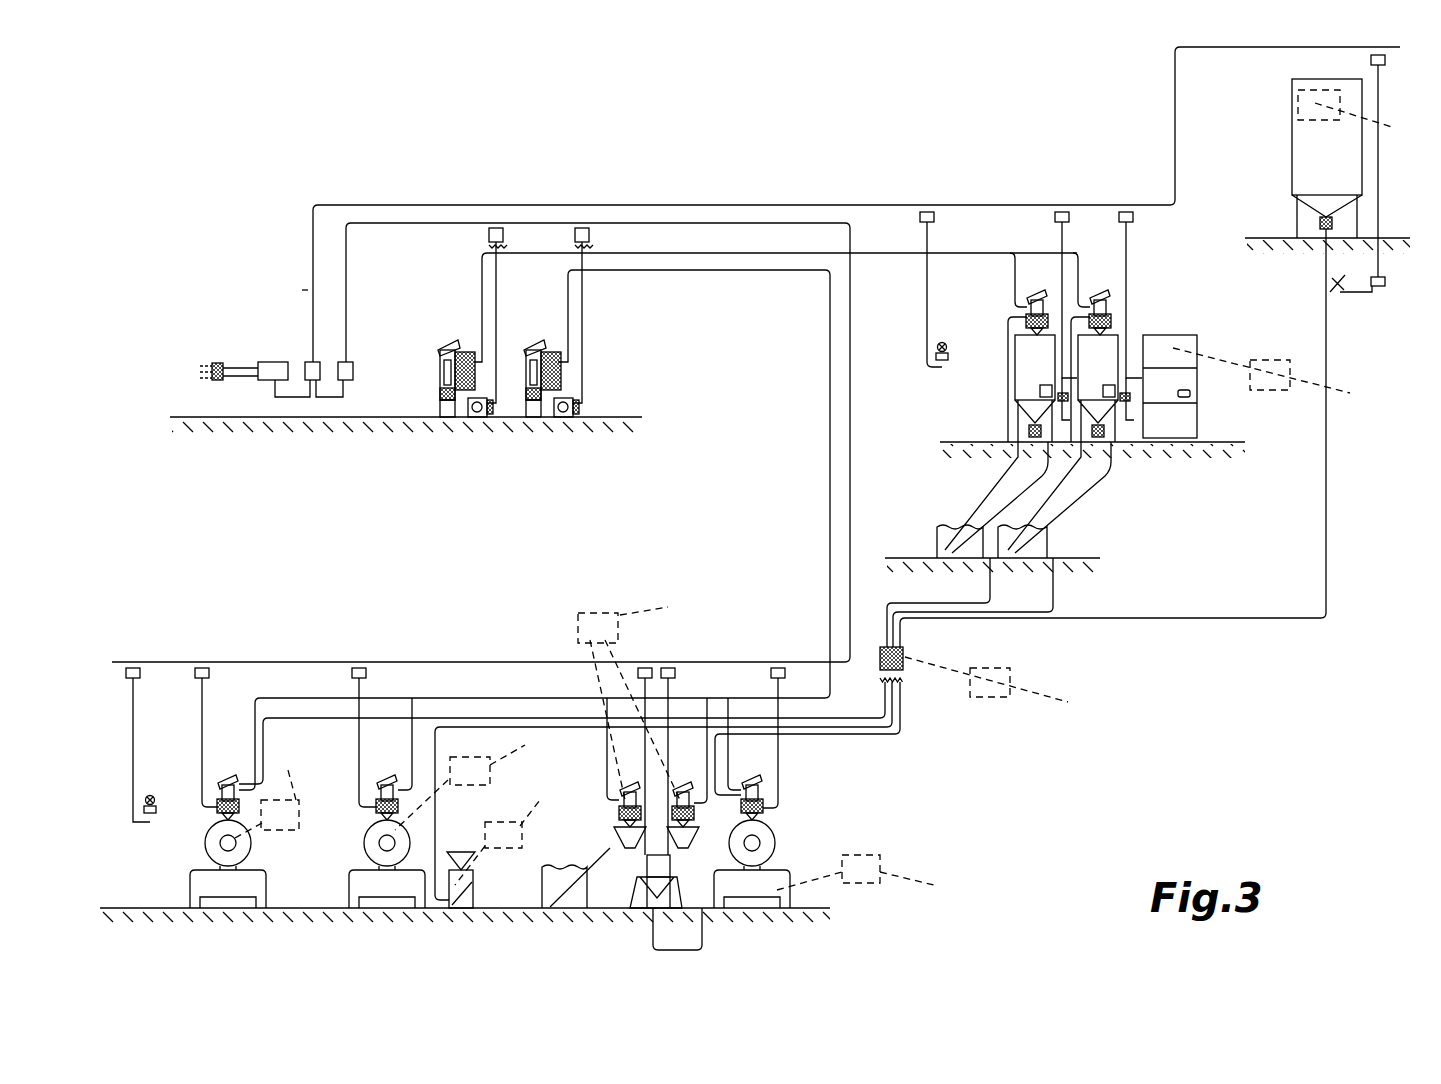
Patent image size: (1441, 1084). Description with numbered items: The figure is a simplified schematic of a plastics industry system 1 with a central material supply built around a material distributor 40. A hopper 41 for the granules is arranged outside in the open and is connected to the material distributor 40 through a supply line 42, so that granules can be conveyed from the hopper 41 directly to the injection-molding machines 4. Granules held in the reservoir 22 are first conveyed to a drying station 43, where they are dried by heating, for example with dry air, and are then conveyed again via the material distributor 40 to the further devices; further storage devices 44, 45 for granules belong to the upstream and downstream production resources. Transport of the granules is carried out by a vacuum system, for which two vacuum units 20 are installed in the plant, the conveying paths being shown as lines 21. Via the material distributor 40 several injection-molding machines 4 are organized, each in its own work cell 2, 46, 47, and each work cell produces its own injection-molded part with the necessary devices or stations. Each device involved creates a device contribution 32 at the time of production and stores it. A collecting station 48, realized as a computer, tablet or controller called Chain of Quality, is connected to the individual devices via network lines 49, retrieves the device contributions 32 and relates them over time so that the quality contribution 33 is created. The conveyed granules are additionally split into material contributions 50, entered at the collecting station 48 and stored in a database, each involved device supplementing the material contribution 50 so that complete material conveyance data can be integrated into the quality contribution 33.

The plastics industry system 1 is at (232, 157).
The work cell 2 is at (216, 752).
The injection-molding machine 4 is at (205, 883).
The vacuum unit 20 is at (448, 352).
The supply line 21 is at (850, 330).
The reservoir 22 is at (552, 900).
The device contribution 32 is at (837, 499).
The quality contribution 33 is at (218, 362).
The material distributor 40 is at (918, 680).
The hopper 41 is at (1310, 150).
The supply line 42 is at (1185, 620).
The drying station 43 is at (1036, 277).
The storage device 44 is at (940, 530).
The storage device 45 is at (1035, 545).
The work cell 46 is at (432, 758).
The work cell 47 is at (800, 798).
The collecting station 48 is at (272, 360).
The network line 49 is at (378, 203).
The material contribution 50 is at (212, 380).